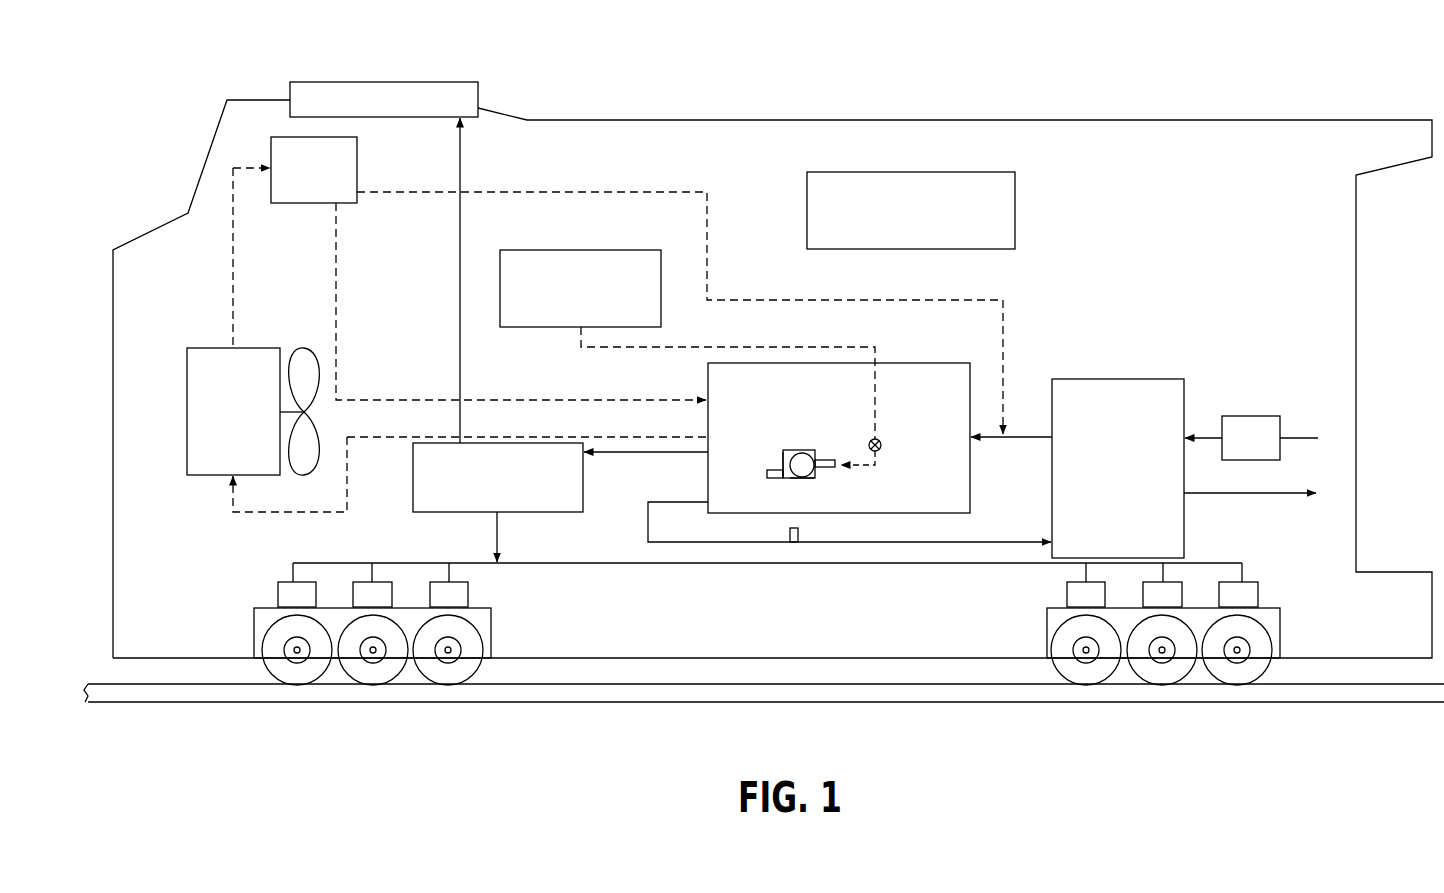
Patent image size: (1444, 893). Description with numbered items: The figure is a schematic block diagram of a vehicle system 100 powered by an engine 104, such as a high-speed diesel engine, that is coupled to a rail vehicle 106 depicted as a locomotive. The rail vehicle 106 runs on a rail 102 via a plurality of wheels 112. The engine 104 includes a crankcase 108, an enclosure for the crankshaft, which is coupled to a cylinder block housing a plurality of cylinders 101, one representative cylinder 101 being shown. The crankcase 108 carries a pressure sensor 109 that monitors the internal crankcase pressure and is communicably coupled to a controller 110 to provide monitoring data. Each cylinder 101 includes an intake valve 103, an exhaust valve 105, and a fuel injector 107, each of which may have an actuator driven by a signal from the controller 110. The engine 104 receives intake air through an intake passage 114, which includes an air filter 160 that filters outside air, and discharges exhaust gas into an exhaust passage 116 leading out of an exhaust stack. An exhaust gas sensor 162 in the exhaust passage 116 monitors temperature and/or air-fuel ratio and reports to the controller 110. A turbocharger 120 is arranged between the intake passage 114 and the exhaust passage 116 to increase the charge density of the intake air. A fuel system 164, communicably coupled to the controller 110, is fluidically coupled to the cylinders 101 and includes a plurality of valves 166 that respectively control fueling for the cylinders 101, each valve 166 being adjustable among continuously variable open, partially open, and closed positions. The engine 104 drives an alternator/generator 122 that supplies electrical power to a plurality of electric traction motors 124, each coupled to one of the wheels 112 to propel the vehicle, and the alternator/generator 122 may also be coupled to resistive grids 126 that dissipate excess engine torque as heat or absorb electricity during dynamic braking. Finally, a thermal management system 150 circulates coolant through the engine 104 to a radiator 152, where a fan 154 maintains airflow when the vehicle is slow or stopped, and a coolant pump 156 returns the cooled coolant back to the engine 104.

The vehicle system 100 is at (1254, 52).
The cylinder 101 is at (811, 458).
The rail 102 is at (1352, 703).
The intake valve 103 is at (796, 451).
The engine 104 is at (907, 424).
The exhaust valve 105 is at (799, 479).
The rail vehicle 106 is at (1085, 119).
The fuel injector 107 is at (820, 469).
The crankcase 108 is at (782, 462).
The pressure sensor 109 is at (767, 473).
The controller 110 is at (1015, 178).
The wheels 112 is at (475, 640).
The intake passage 114 is at (985, 440).
The exhaust passage 116 is at (985, 542).
The turbocharger 120 is at (1104, 495).
The alternator/generator 122 is at (412, 480).
The electric traction motors 124 is at (468, 595).
The resistive grids 126 is at (458, 82).
The thermal management system 150 is at (204, 304).
The radiator 152 is at (217, 422).
The fan 154 is at (312, 350).
The coolant pump 156 is at (297, 180).
The air filter 160 is at (1235, 450).
The exhaust gas sensor 162 is at (798, 538).
The fuel system 164 is at (564, 313).
The valves 166 is at (881, 447).